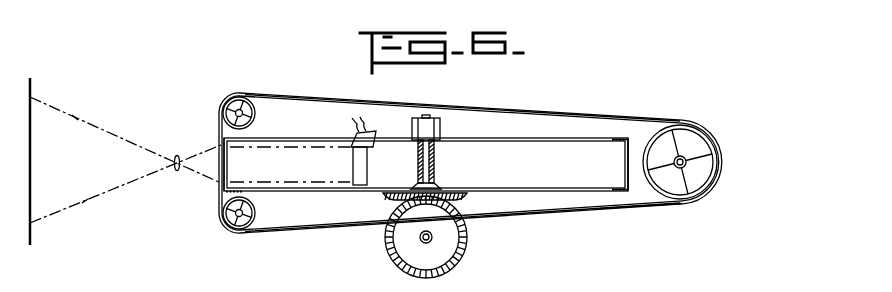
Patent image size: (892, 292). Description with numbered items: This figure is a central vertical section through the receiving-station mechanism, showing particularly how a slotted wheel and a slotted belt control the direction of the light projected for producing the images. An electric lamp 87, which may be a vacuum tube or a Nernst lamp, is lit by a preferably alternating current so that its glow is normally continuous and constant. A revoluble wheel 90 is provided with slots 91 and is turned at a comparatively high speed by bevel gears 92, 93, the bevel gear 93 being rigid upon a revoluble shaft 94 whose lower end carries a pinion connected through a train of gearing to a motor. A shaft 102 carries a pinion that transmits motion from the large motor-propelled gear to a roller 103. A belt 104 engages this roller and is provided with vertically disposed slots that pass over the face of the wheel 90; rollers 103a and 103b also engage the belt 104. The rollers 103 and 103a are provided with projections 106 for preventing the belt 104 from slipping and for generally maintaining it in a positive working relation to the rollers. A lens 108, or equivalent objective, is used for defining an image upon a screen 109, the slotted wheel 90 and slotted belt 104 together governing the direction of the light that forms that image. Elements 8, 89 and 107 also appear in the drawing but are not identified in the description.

The film box end wall 8 is at (629, 152).
The electric lamp 87 is at (352, 162).
The lamp rays / vent 89 is at (368, 152).
The revoluble wheel 90 is at (532, 140).
The slots 91 is at (228, 167).
The bevel gear 92 is at (468, 196).
The bevel gear 93 is at (468, 250).
The revoluble shaft 94 is at (420, 238).
The shaft 102 is at (256, 213).
The roller 103 is at (221, 223).
The roller 103a is at (256, 113).
The roller 103b is at (653, 193).
The belt 104 is at (520, 110).
The projections 106 is at (248, 233).
The drive wheel 107 is at (686, 158).
The lens 108 is at (176, 171).
The screen 109 is at (30, 132).